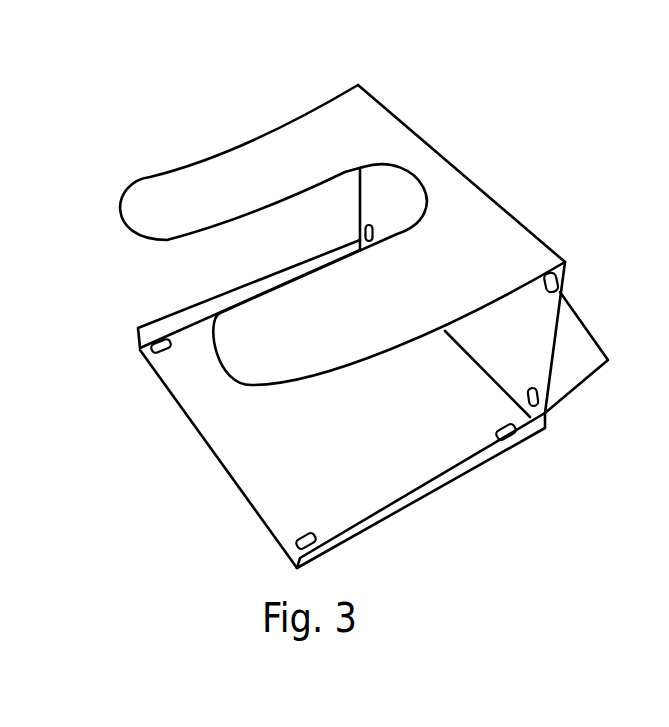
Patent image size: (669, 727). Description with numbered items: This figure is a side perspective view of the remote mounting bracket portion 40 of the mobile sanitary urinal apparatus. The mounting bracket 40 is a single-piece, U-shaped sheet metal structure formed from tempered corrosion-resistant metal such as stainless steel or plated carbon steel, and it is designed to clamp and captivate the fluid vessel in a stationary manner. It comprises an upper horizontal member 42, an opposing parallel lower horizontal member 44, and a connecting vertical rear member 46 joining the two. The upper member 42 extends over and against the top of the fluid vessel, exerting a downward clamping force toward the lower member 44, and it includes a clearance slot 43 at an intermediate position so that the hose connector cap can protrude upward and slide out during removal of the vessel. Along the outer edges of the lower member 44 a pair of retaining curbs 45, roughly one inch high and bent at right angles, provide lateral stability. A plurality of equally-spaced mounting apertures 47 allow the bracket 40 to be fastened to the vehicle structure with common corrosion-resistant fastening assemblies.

The remote mounting bracket portion 40 is at (458, 117).
The upper horizontal member 42 is at (213, 166).
The clearance slot 43 is at (424, 200).
The lower horizontal member 44 is at (428, 447).
The retaining curbs 45 is at (398, 512).
The connecting vertical rear member 46 is at (547, 413).
The mounting apertures 47 is at (362, 228).